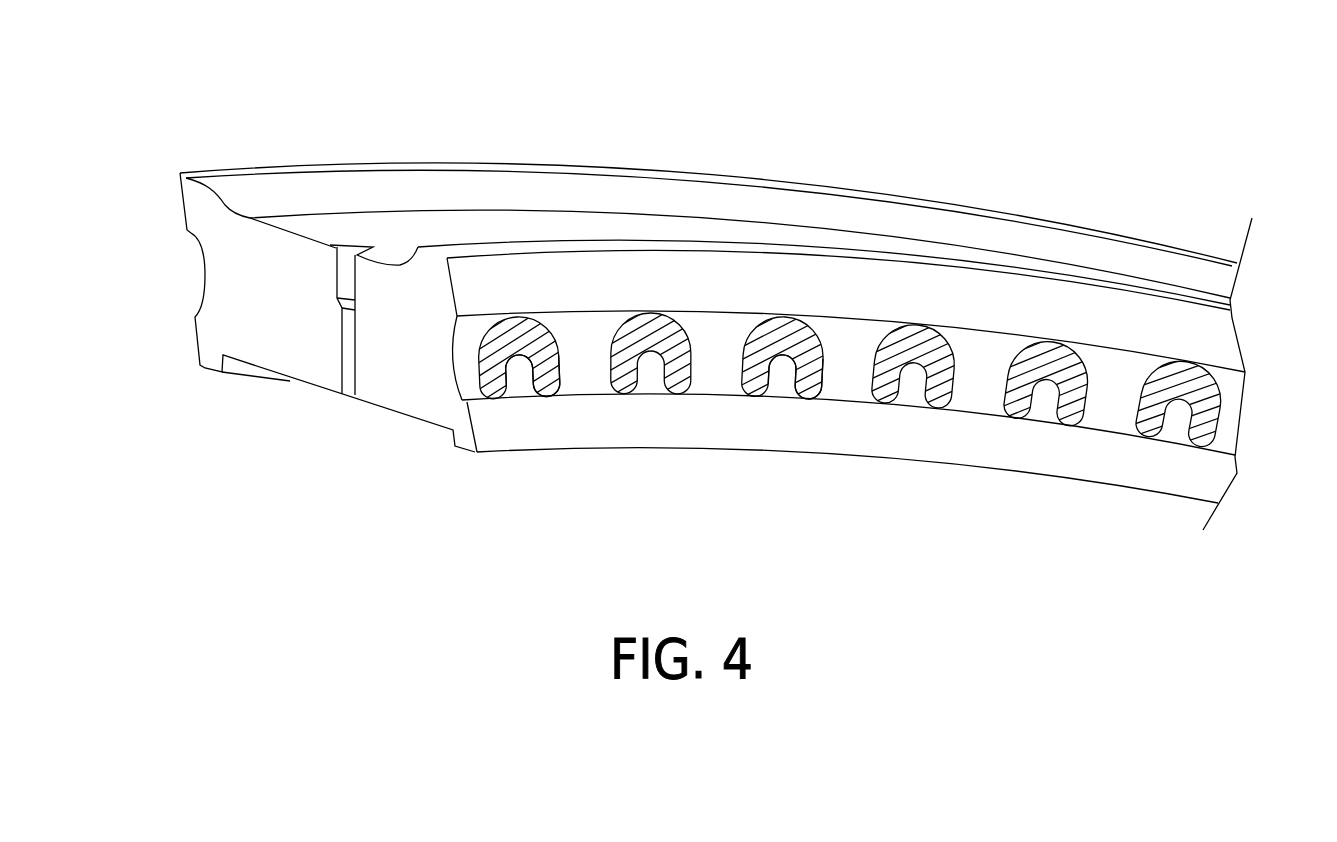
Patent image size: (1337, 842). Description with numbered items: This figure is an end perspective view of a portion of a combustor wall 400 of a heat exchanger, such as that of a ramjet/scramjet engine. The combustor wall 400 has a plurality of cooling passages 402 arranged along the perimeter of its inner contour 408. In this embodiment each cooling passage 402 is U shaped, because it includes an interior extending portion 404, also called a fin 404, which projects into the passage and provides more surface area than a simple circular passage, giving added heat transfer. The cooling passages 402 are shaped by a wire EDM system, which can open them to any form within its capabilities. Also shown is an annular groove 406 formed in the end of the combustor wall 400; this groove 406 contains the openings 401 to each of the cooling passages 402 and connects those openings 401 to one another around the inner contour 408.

The combustor wall 400 is at (541, 108).
The openings 401 is at (820, 328).
The cooling passages 402 is at (547, 367).
The interior extending portion 404 is at (522, 378).
The annular groove 406 is at (468, 378).
The inner contour 408 is at (935, 462).